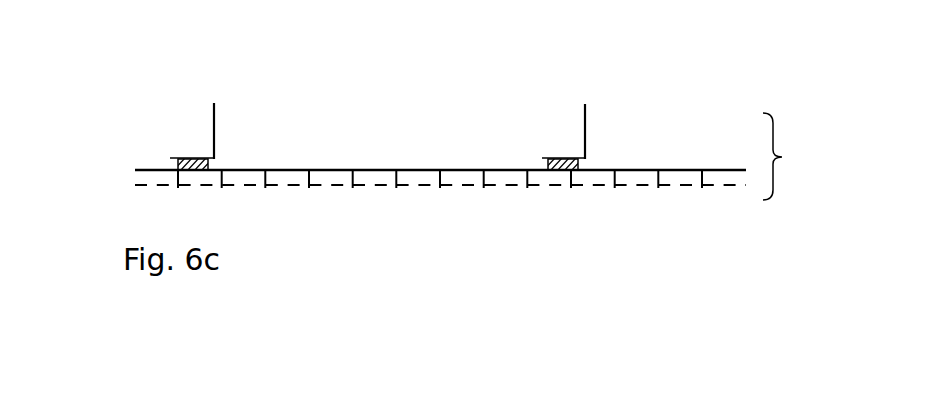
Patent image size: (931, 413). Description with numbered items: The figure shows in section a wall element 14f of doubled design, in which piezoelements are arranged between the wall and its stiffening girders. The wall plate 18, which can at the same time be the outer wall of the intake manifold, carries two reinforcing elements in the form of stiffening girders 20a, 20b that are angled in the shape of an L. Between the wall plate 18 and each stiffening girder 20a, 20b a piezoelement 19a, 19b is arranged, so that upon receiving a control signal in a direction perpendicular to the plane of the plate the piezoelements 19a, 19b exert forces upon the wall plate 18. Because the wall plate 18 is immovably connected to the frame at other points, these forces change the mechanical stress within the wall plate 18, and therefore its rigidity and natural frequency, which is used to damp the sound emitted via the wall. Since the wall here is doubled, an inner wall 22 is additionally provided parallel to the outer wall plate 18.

The wall element 14f is at (809, 156).
The wall plate 18 is at (420, 171).
The piezoelement 19a is at (177, 162).
The piezoelement 19b is at (580, 165).
The stiffening girder 20a is at (213, 112).
The stiffening girder 20b is at (587, 122).
The inner wall 22 is at (373, 186).